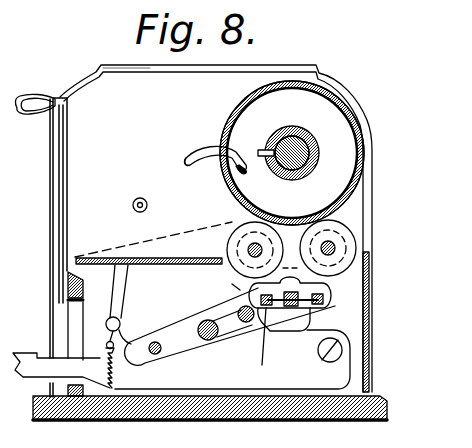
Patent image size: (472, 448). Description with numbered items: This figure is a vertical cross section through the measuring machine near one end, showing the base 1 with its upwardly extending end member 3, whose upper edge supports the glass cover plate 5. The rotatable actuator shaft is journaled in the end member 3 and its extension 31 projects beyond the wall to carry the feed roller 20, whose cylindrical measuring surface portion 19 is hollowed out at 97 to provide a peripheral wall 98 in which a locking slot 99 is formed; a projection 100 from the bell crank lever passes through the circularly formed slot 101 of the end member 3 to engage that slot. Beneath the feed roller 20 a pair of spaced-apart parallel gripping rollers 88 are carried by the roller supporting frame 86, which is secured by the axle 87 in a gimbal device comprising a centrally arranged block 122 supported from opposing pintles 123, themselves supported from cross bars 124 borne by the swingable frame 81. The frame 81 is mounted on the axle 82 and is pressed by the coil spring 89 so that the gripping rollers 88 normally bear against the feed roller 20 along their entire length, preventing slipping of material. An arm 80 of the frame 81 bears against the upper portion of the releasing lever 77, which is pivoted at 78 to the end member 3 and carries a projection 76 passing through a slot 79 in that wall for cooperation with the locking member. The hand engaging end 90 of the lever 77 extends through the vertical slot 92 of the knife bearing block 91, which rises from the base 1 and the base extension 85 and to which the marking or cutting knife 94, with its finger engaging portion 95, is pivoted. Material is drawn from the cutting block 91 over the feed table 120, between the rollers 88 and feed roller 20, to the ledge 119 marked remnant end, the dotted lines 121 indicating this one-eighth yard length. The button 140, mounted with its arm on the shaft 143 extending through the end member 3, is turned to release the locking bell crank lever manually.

The base 1 is at (392, 403).
The end member 3 is at (126, 190).
The glass cover plate 5 is at (150, 72).
The measuring surface portion 19 is at (367, 142).
The feed roller 20 is at (326, 82).
The extension 31 is at (306, 146).
The projection 76 is at (122, 318).
The releasing lever 77 is at (206, 382).
The pivot 78 is at (331, 355).
The slot 79 is at (131, 284).
The arm 80 is at (187, 329).
The swingable frame 81 is at (238, 331).
The axle 82 is at (231, 312).
The base extension 85 is at (65, 413).
The roller supporting frame 86 is at (330, 299).
The axle 87 is at (292, 307).
The gripping rollers 88 is at (272, 255).
The coil spring 89 is at (210, 339).
The hand engaging end 90 is at (31, 372).
The knife bearing block 91 is at (87, 285).
The vertical slot 92 is at (76, 322).
The marking or cutting knife 94 is at (64, 173).
The finger engaging portion 95 is at (30, 100).
The hollowed out end 97 is at (318, 216).
The peripheral wall 98 is at (256, 97).
The locking slot 99 is at (212, 150).
The projection 100 is at (251, 155).
The circularly formed slot 101 is at (186, 160).
The ledge 119 is at (373, 393).
The feed table 120 is at (157, 256).
The dotted lines 121 is at (110, 252).
The block 122 is at (232, 284).
The pintles 123 is at (308, 305).
The cross bars 124 is at (387, 315).
The button 140 is at (133, 205).
The shaft 143 is at (146, 202).